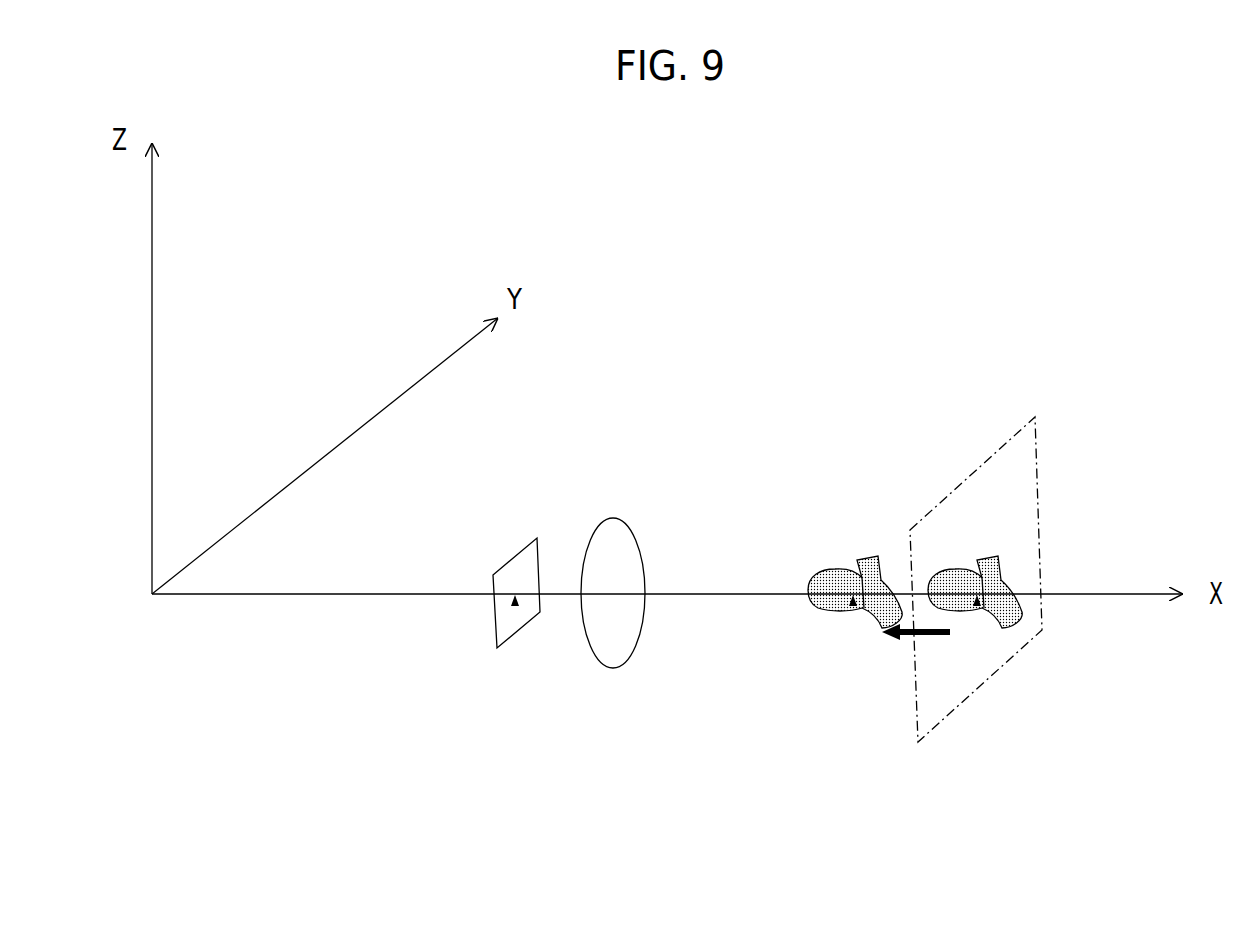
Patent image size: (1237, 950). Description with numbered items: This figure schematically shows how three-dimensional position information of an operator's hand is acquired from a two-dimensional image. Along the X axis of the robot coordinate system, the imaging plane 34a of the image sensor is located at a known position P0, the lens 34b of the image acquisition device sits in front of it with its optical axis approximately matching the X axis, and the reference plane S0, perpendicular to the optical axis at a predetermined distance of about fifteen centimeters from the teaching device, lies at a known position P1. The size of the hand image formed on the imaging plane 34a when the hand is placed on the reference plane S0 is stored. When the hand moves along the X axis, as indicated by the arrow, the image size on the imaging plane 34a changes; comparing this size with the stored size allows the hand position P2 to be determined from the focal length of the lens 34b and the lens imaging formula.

The imaging plane 34a is at (508, 558).
The lens 34b is at (633, 536).
The reference plane S0 is at (987, 458).
The position of the imaging plane P0 is at (515, 604).
The position of the reference plane P1 is at (977, 604).
The position of the hand P2 is at (853, 604).